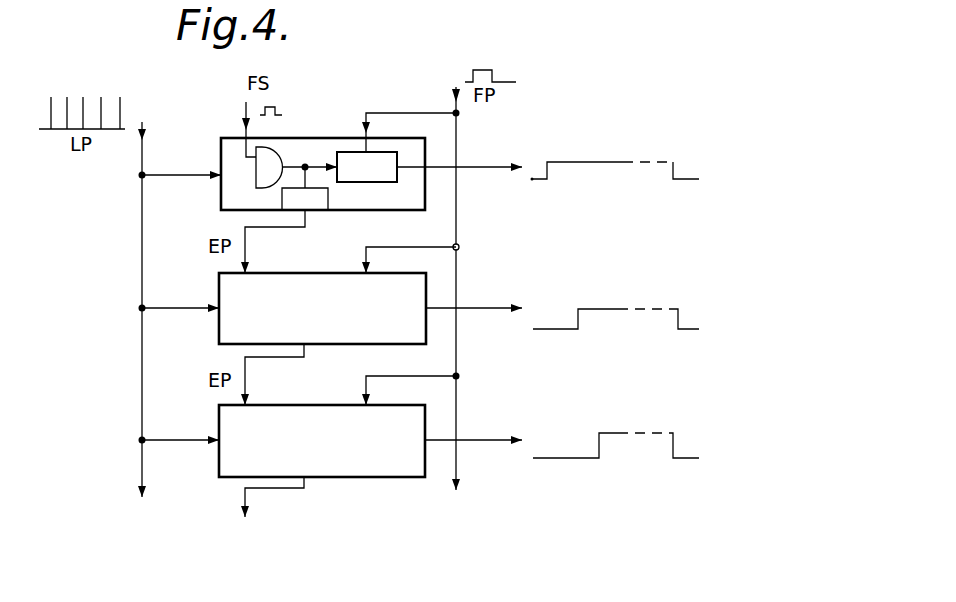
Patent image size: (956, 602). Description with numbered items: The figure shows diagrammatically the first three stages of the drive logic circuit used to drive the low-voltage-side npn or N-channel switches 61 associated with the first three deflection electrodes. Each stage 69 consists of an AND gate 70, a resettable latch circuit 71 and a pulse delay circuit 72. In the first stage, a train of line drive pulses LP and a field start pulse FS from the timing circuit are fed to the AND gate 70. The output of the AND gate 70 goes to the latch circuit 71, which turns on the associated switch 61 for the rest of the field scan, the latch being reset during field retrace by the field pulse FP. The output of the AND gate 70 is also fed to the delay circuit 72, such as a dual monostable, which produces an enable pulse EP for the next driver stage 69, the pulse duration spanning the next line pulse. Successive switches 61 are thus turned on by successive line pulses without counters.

The switch 61 is at (600, 296).
The driver stage 69 is at (221, 199).
The AND gate 70 is at (280, 151).
The resettable latch circuit 71 is at (373, 173).
The pulse delay circuit 72 is at (318, 203).